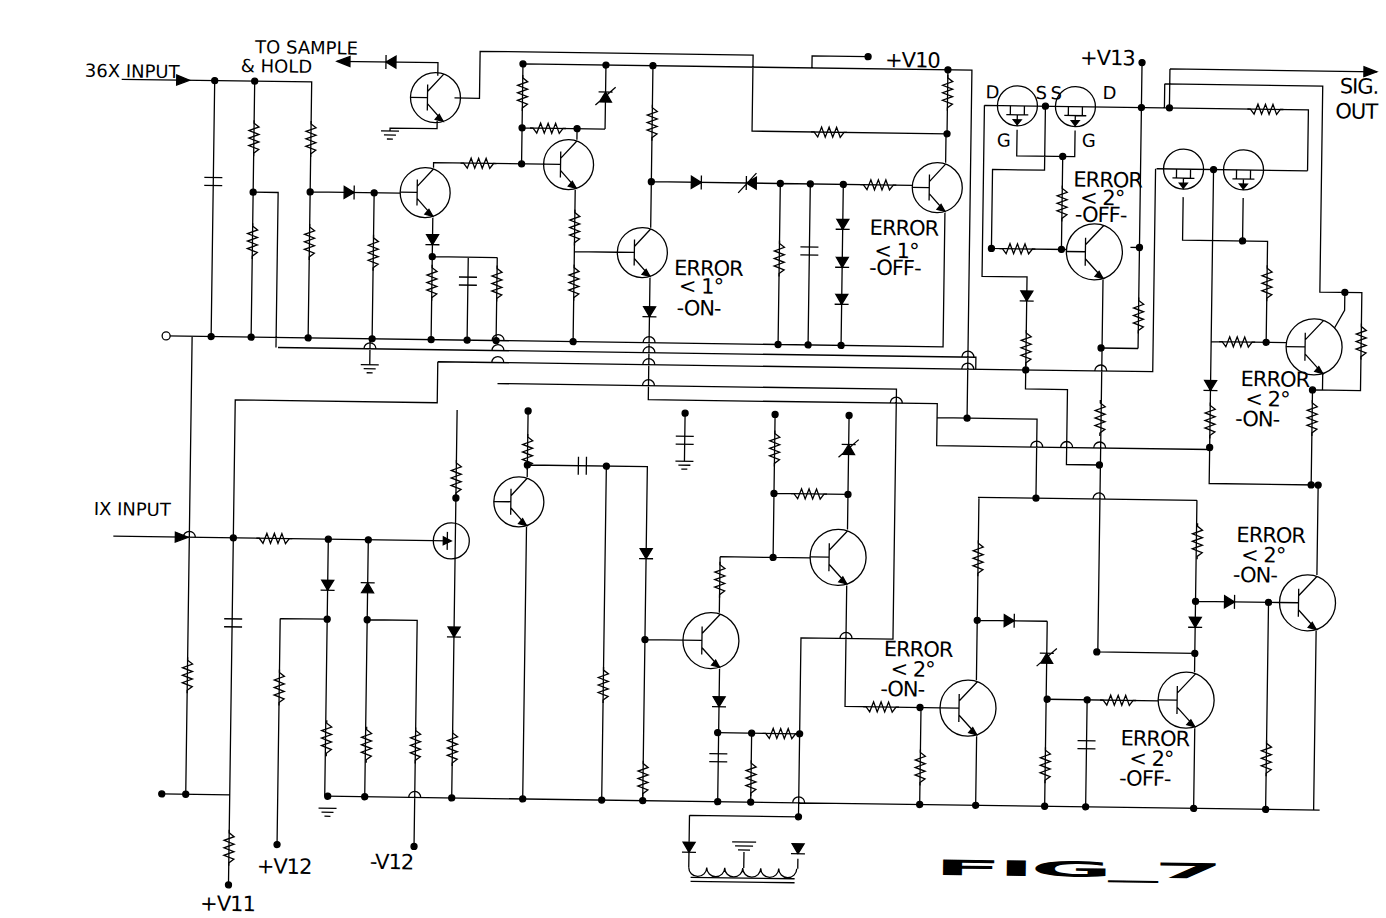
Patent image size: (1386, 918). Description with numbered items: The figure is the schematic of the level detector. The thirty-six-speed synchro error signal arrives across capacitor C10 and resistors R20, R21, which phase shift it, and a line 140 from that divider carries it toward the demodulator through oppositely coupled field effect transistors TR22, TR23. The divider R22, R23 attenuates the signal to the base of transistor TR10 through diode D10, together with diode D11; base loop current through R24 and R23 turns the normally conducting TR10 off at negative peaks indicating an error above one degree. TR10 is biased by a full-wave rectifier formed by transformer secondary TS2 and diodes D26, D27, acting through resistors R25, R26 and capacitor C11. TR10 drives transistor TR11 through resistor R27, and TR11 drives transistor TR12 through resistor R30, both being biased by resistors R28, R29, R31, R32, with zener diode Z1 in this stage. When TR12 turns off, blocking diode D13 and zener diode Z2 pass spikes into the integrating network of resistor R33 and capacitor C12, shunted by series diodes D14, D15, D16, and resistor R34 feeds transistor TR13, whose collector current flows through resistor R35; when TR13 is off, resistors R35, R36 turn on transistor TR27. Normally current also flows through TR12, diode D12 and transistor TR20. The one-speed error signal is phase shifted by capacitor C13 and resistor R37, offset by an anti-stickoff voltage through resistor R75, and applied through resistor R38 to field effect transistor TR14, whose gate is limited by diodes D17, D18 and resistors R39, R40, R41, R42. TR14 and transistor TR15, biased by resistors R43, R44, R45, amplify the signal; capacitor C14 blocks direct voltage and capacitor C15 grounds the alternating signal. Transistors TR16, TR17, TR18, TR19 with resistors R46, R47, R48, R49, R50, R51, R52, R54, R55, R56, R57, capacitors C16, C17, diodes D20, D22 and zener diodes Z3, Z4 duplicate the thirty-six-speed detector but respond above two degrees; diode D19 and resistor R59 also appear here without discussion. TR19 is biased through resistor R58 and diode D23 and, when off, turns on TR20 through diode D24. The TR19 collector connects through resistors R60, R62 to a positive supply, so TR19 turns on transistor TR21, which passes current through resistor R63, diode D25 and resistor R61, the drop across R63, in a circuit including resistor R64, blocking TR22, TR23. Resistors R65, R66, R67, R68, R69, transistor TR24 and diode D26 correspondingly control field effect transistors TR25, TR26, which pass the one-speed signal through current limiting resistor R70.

The resistor R20 is at (245, 135).
The resistor R21 is at (246, 252).
The resistor R22 is at (312, 136).
The resistor R23 is at (366, 240).
The resistor R24 is at (314, 252).
The resistor R25 is at (426, 284).
The resistor R26 is at (498, 276).
The resistor R27 is at (496, 162).
The biasing resistor R28 is at (543, 90).
The biasing resistor R29 is at (549, 114).
The resistor R30 is at (602, 222).
The biasing resistor R31 is at (568, 288).
The biasing resistor R32 is at (652, 122).
The resistor R33 is at (774, 238).
The resistor R34 is at (872, 178).
The resistor R35 is at (938, 99).
The resistor R36 is at (829, 120).
The resistor R37 is at (186, 681).
The resistor R38 is at (284, 540).
The limiting resistor R39 is at (288, 678).
The limiting resistor R40 is at (326, 745).
The limiting resistor R41 is at (374, 730).
The limiting resistor R42 is at (416, 750).
The biasing resistor R43 is at (461, 766).
The biasing resistor R44 is at (448, 475).
The biasing resistor R45 is at (534, 448).
The resistor R46 is at (600, 685).
The resistor R47 is at (650, 772).
The resistor R48 is at (769, 771).
The resistor R49 is at (788, 727).
The resistor R50 is at (728, 586).
The resistor R51 is at (768, 450).
The resistor R52 is at (840, 490).
The resistor R54 is at (920, 762).
The resistor R55 is at (986, 560).
The resistor R56 is at (1044, 764).
The resistor R57 is at (1114, 682).
The resistor R58 is at (1194, 540).
The resistor R59 is at (1266, 750).
The resistor R60 is at (1110, 420).
The resistor R61 is at (1030, 346).
The resistor R62 is at (1134, 321).
The resistor R63 is at (1034, 222).
The resistor R64 is at (1056, 197).
The resistor R65 is at (1316, 400).
The resistor R66 is at (1214, 426).
The resistor R67 is at (1360, 312).
The resistor R68 is at (1246, 314).
The resistor R69 is at (1266, 270).
The current limiting resistor R70 is at (1248, 106).
The resistor R75 is at (228, 845).
The capacitor C10 is at (204, 183).
The capacitor C11 is at (463, 288).
The integrating capacitor C12 is at (800, 252).
The capacitor C13 is at (233, 624).
The capacitor C14 is at (589, 463).
The capacitor C15 is at (676, 438).
The capacitor C16 is at (716, 756).
The capacitor C17 is at (1087, 734).
The diode D10 is at (345, 190).
The diode D11 is at (437, 243).
The diode D12 is at (640, 316).
The blocking diode D13 is at (692, 186).
The diode D14 is at (846, 220).
The diode D15 is at (848, 264).
The diode D16 is at (847, 303).
The limiting diode D17 is at (322, 586).
The limiting diode D18 is at (376, 595).
The diode D19 is at (464, 635).
The diode D20 is at (656, 554).
The diode D22 is at (1010, 608).
The diode D23 is at (1190, 618).
The diode D24 is at (1232, 600).
The diode D25 is at (1030, 291).
The diode D26 is at (1202, 384).
The diode D27 is at (384, 70).
The zener diode Z1 is at (614, 113).
The zener diode Z2 is at (766, 176).
The zener diode Z3 is at (838, 438).
The zener diode Z4 is at (1060, 654).
The transistor TR10 is at (442, 216).
The transistor TR11 is at (595, 170).
The transistor TR12 is at (664, 242).
The transistor TR13 is at (924, 166).
The field effect transistor TR14 is at (434, 526).
The transistor TR15 is at (544, 512).
The transistor TR16 is at (728, 652).
The transistor TR17 is at (818, 538).
The transistor TR18 is at (1010, 726).
The transistor TR19 is at (1206, 710).
The transistor TR20 is at (1303, 613).
The transistor TR21 is at (1078, 262).
The field effect transistor TR22 is at (1014, 84).
The field effect transistor TR23 is at (1085, 84).
The transistor TR24 is at (1312, 312).
The field effect transistor TR25 is at (1184, 132).
The field effect transistor TR26 is at (1248, 122).
The transistor TR27 is at (406, 100).
The transformer secondary TS2 is at (804, 872).
The line 140 is at (278, 340).